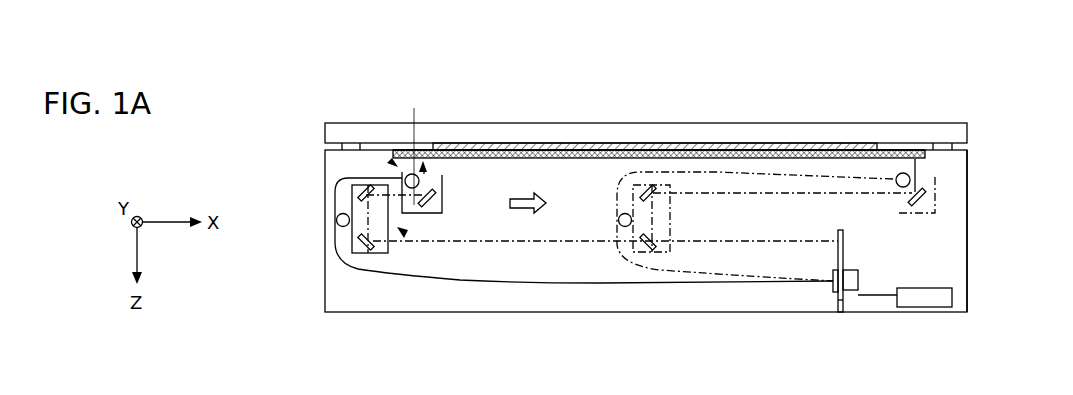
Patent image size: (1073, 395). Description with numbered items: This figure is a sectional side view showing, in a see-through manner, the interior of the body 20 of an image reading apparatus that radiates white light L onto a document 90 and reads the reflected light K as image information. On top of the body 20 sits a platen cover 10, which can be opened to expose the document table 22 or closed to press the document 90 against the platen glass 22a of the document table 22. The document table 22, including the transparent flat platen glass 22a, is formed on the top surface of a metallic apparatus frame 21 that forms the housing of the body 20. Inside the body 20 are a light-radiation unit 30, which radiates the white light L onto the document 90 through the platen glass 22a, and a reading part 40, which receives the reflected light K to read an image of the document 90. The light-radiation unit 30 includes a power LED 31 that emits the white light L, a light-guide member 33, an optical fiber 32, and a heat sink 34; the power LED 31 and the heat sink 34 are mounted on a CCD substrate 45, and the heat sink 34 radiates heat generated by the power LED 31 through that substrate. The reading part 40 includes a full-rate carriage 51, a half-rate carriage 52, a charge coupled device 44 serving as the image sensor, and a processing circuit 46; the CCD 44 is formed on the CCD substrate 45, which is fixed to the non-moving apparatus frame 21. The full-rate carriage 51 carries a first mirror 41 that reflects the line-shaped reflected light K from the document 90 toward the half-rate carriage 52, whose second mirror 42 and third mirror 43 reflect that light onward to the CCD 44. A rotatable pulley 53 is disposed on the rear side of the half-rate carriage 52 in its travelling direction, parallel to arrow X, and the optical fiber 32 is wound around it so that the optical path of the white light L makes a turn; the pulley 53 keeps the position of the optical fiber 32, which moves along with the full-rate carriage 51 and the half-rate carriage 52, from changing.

The platen cover 10 is at (325, 133).
The body 20 is at (316, 293).
The apparatus frame 21 is at (967, 220).
The document table 22 is at (613, 144).
The platen glass 22a is at (570, 150).
The document 90 is at (523, 143).
The light-radiation unit 30 is at (392, 162).
The power LED 31 is at (833, 290).
The optical fiber 32 is at (352, 177).
The light-guide member 33 is at (407, 175).
The heat sink 34 is at (858, 288).
The reading part 40 is at (404, 233).
The first mirror 41 is at (436, 208).
The second mirror 42 is at (352, 190).
The third mirror 43 is at (361, 253).
The charge coupled device (CCD) 44 is at (838, 242).
The CCD substrate 45 is at (845, 308).
The processing circuit 46 is at (952, 297).
The full-rate carriage 51 is at (443, 188).
The half-rate carriage 52 is at (386, 253).
The pulley 53 is at (338, 224).
The white light L is at (413, 146).
The reflected light K is at (424, 172).